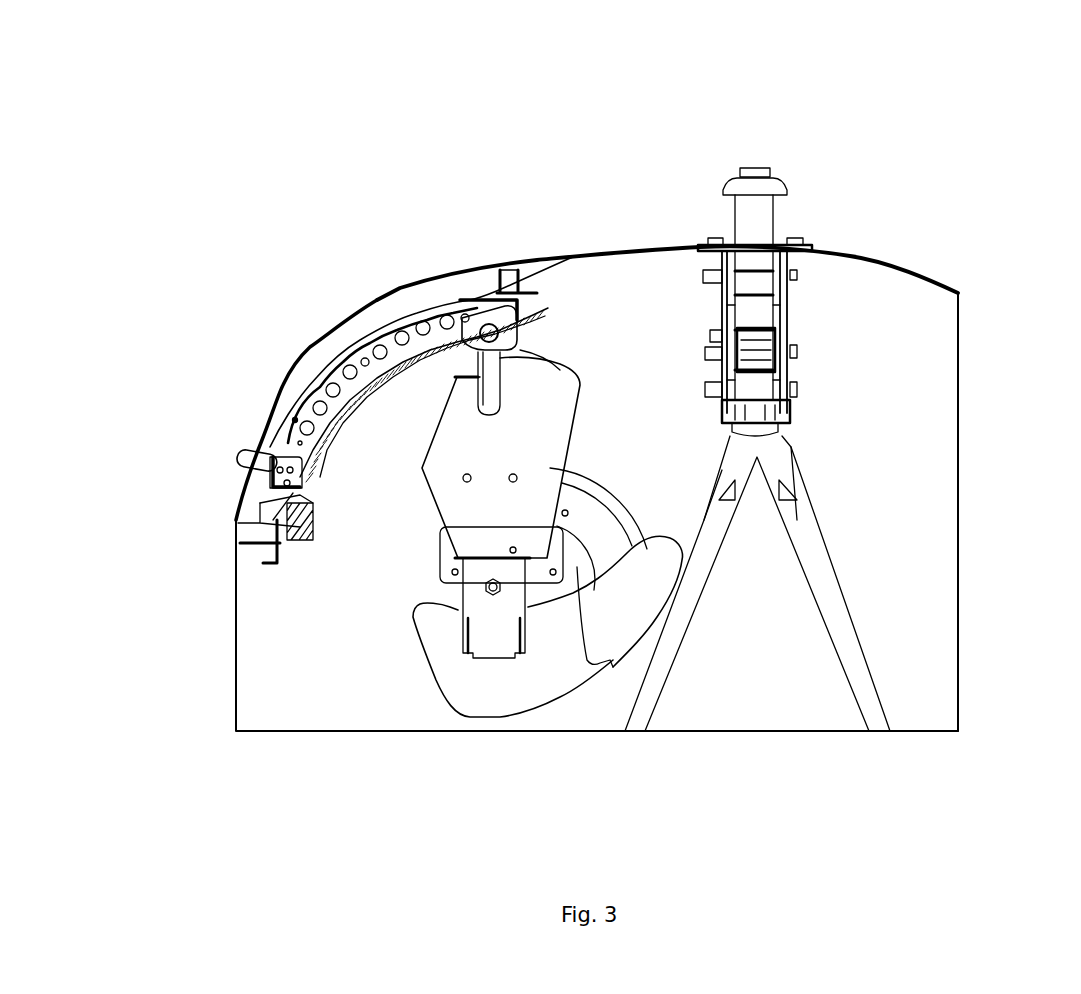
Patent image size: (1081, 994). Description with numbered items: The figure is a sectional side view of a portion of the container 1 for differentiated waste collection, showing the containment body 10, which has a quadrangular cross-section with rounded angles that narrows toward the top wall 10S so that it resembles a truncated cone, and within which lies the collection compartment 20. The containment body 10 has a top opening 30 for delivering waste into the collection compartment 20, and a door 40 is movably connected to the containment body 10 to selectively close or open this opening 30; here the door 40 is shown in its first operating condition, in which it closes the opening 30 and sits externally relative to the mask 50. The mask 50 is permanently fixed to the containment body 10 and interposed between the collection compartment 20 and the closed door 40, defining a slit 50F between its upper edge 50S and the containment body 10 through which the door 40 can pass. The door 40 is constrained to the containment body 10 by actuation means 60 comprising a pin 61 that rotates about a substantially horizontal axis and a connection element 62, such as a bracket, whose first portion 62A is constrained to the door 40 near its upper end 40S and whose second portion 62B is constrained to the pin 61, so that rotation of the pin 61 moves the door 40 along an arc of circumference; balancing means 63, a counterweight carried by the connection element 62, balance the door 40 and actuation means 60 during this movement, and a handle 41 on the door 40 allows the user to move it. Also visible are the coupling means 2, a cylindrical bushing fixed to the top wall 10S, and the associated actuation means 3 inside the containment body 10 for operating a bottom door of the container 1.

The container 1 is at (282, 100).
The coupling means 2 is at (763, 217).
The actuation means 3 is at (841, 384).
The containment body 10 is at (236, 662).
The top wall 10S is at (662, 250).
The collection compartment 20 is at (913, 547).
The top opening 30 is at (293, 363).
The door 40 is at (387, 340).
The upper end 40S is at (487, 313).
The handle 41 is at (240, 460).
The mask 50 is at (270, 487).
The upper edge 50S is at (447, 315).
The slit 50F is at (573, 317).
The actuation means 60 is at (349, 567).
The pin 61 is at (613, 667).
The connection element 62 is at (603, 390).
The first portion 62A is at (543, 320).
The second portion 62B is at (515, 510).
The balancing means 63 is at (487, 690).